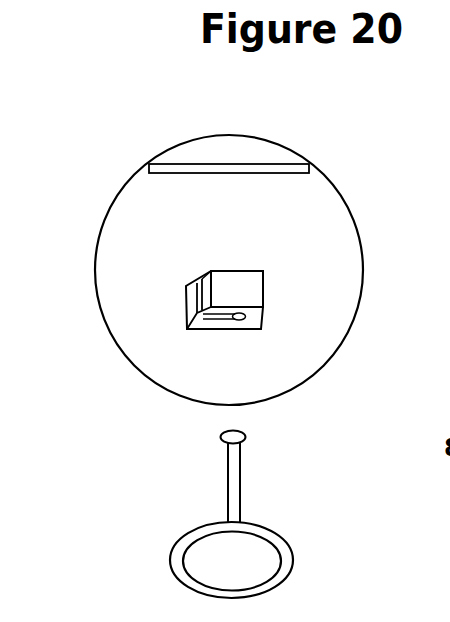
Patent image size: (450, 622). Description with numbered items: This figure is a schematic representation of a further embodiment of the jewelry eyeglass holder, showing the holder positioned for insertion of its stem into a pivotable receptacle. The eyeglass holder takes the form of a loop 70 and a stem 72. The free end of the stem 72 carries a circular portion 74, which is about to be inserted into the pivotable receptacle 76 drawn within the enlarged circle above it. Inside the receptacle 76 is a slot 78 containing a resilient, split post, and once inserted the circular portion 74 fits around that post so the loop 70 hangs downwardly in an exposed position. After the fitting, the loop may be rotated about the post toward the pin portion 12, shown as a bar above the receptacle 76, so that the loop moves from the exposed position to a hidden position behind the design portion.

The pin portion 12 is at (265, 168).
The loop 70 is at (285, 560).
The stem 72 is at (238, 473).
The circular portion 74 is at (236, 438).
The pivotable receptacle 76 is at (264, 288).
The slot 78 is at (196, 313).